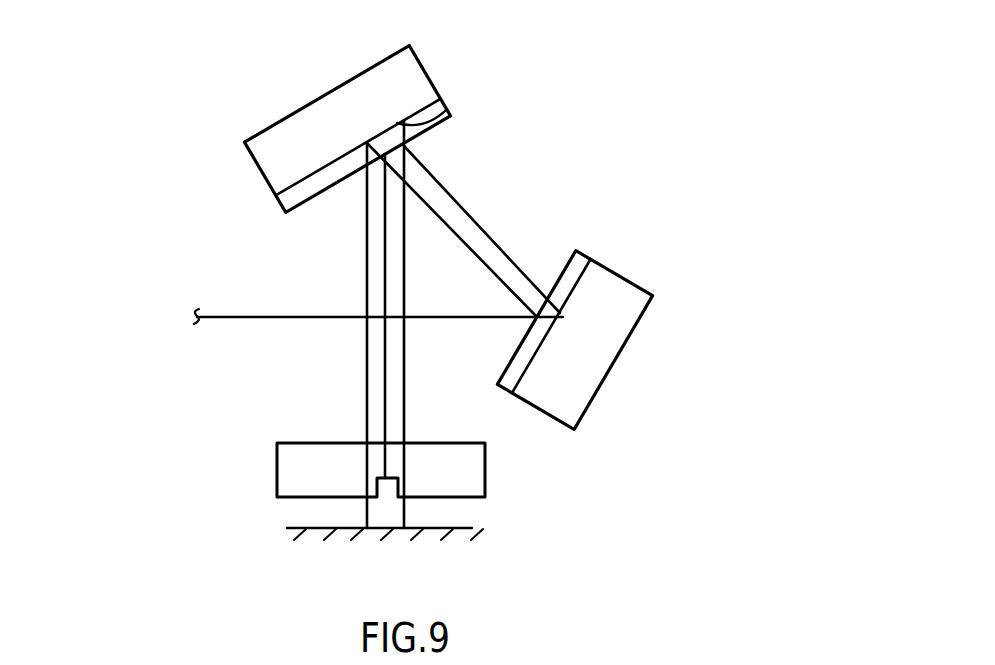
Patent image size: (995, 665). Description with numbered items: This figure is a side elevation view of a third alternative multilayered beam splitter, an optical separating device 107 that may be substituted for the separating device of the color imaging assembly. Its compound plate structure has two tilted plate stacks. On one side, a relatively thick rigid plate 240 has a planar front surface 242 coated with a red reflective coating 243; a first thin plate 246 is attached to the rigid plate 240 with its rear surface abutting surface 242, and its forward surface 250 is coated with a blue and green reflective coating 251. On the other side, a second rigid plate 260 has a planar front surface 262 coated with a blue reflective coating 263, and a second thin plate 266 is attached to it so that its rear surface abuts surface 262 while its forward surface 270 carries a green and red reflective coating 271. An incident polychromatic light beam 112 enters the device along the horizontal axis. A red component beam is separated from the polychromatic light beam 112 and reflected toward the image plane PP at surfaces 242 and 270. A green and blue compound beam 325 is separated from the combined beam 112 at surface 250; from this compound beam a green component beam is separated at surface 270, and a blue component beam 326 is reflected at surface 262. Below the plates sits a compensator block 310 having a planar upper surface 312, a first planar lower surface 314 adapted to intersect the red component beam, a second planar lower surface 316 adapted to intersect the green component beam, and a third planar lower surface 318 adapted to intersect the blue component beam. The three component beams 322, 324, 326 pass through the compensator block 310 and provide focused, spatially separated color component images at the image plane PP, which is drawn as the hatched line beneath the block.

The optical separating device 107 is at (222, 110).
The second rigid plate 260 is at (366, 56).
The planar front surface 262 is at (415, 107).
The blue reflective coating 263 is at (448, 124).
The second thin plate 266 is at (270, 204).
The forward surface 270 is at (302, 208).
The green and red reflective coating 271 is at (326, 192).
The component beam 322 is at (430, 177).
The green and blue compound beam 325 is at (453, 233).
The component beam 324 is at (383, 337).
The blue component beam 326 is at (367, 375).
The polychromatic light beam 112 is at (231, 316).
The rigid plate 240 is at (622, 365).
The red reflective coating 243 is at (540, 340).
The planar front surface 242 is at (522, 377).
The forward surface 250 is at (555, 305).
The blue and green reflective coating 251 is at (566, 262).
The first thin plate 246 is at (600, 252).
The compensator block 310 is at (268, 469).
The planar upper surface 312 is at (302, 443).
The first planar lower surface 314 is at (463, 503).
The second planar lower surface 316 is at (391, 490).
The third planar lower surface 318 is at (312, 498).
The image plane PP is at (473, 528).